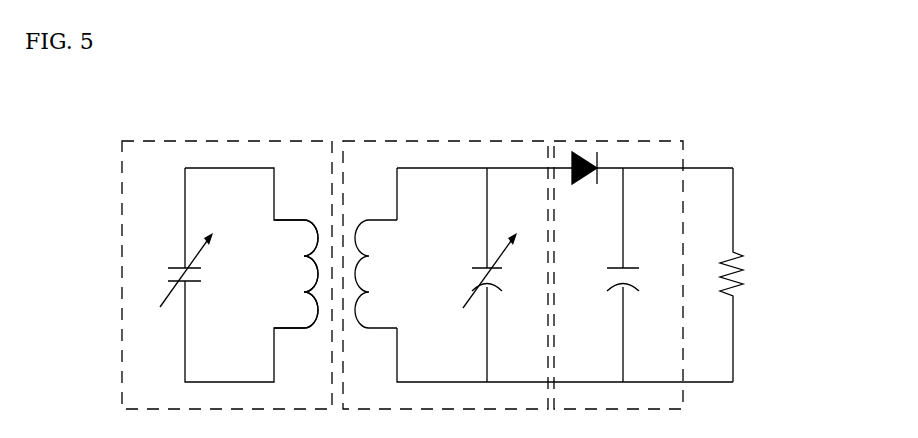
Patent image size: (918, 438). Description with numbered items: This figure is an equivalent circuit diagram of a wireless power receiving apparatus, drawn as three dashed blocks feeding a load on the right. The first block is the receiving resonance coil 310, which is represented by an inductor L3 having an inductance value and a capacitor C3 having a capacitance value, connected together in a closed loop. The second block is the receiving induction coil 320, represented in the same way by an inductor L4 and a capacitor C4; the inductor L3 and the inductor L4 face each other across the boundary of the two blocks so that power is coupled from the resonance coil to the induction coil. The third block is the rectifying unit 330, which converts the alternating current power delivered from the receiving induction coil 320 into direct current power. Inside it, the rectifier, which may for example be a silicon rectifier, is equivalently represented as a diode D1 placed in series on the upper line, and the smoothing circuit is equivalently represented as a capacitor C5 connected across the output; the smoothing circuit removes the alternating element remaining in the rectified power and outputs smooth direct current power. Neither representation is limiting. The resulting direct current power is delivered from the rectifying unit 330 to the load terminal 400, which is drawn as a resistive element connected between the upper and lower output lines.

The receiving resonance coil 310 is at (208, 140).
The receiving induction coil 320 is at (460, 140).
The rectifying unit 330 is at (640, 140).
The load terminal 400 is at (756, 242).
The capacitor C3 is at (177, 270).
The inductor L3 is at (296, 274).
The inductor L4 is at (376, 274).
The capacitor C4 is at (497, 275).
The diode D1 is at (584, 180).
The capacitor C5 is at (637, 275).